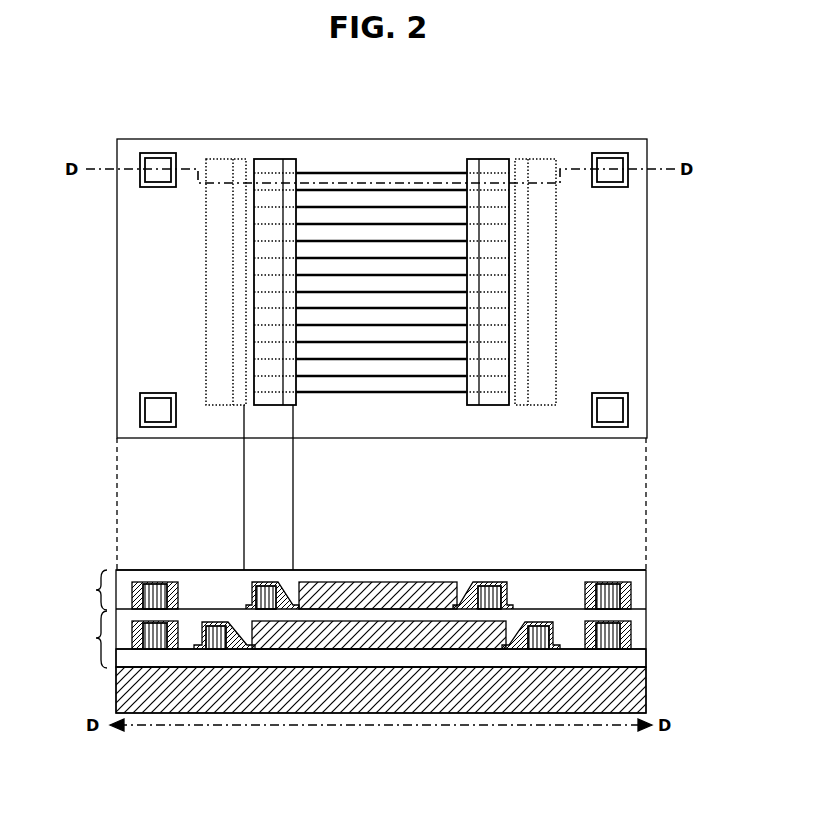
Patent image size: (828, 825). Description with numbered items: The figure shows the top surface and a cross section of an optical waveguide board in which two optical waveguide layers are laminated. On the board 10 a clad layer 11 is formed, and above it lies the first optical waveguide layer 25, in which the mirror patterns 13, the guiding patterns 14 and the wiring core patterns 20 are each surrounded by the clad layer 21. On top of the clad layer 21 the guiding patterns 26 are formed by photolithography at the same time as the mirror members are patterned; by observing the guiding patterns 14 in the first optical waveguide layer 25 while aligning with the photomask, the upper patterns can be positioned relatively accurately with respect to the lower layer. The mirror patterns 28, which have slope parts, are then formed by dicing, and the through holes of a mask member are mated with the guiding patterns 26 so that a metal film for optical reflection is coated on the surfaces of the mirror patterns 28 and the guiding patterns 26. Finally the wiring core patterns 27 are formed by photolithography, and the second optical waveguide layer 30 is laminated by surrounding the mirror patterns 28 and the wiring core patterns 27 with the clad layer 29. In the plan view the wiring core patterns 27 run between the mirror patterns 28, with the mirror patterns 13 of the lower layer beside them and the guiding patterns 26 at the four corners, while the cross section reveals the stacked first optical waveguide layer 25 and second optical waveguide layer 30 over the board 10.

The board 10 is at (645, 685).
The clad layer 11 is at (645, 660).
The mirror patterns 13 is at (222, 160).
The guiding patterns 14 is at (617, 637).
The wiring core patterns 20 is at (492, 385).
The clad layer 21 is at (628, 627).
The first optical waveguide layer 25 is at (87, 639).
The guiding patterns 26 is at (153, 162).
The wiring core patterns 27 is at (387, 177).
The mirror patterns 28 is at (272, 160).
The clad layer 29 is at (563, 572).
The second optical waveguide layer 30 is at (87, 590).